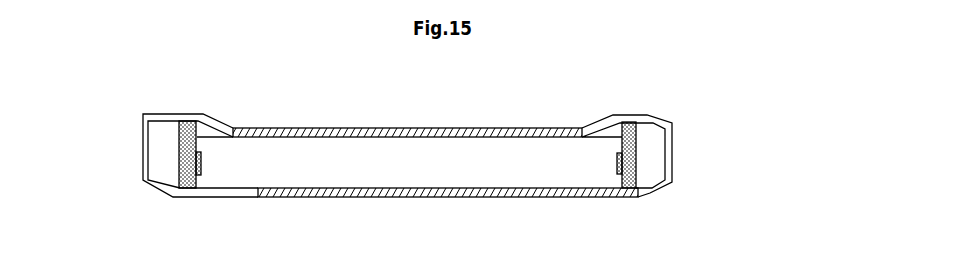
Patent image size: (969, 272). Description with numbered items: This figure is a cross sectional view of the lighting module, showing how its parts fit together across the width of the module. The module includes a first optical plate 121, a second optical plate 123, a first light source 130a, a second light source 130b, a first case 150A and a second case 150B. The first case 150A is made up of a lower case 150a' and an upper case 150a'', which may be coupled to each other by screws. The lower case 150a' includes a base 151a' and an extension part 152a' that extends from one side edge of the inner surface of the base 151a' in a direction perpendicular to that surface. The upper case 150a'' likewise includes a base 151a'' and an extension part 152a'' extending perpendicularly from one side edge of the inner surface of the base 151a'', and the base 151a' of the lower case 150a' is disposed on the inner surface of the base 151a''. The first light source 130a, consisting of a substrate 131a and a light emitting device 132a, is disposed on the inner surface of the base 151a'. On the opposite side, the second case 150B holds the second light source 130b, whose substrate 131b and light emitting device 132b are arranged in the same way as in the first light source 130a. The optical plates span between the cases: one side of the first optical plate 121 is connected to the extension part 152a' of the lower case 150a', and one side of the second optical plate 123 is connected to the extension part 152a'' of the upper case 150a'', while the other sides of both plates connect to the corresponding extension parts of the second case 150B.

The first optical plate 121 is at (400, 197).
The second optical plate 123 is at (399, 128).
The first light source 130a is at (621, 192).
The substrate 131a is at (635, 188).
The light emitting device 132a is at (618, 174).
The second light source 130b is at (205, 196).
The substrate 131b is at (185, 188).
The light emitting device 132b is at (198, 176).
The first case 150A is at (703, 161).
The second case 150B is at (127, 159).
The lower case 150a' is at (708, 192).
The upper case 150a'' is at (681, 119).
The base 151a' is at (683, 179).
The base 151a'' is at (657, 133).
The extension part 152a' is at (684, 192).
The extension part 152a'' is at (658, 119).